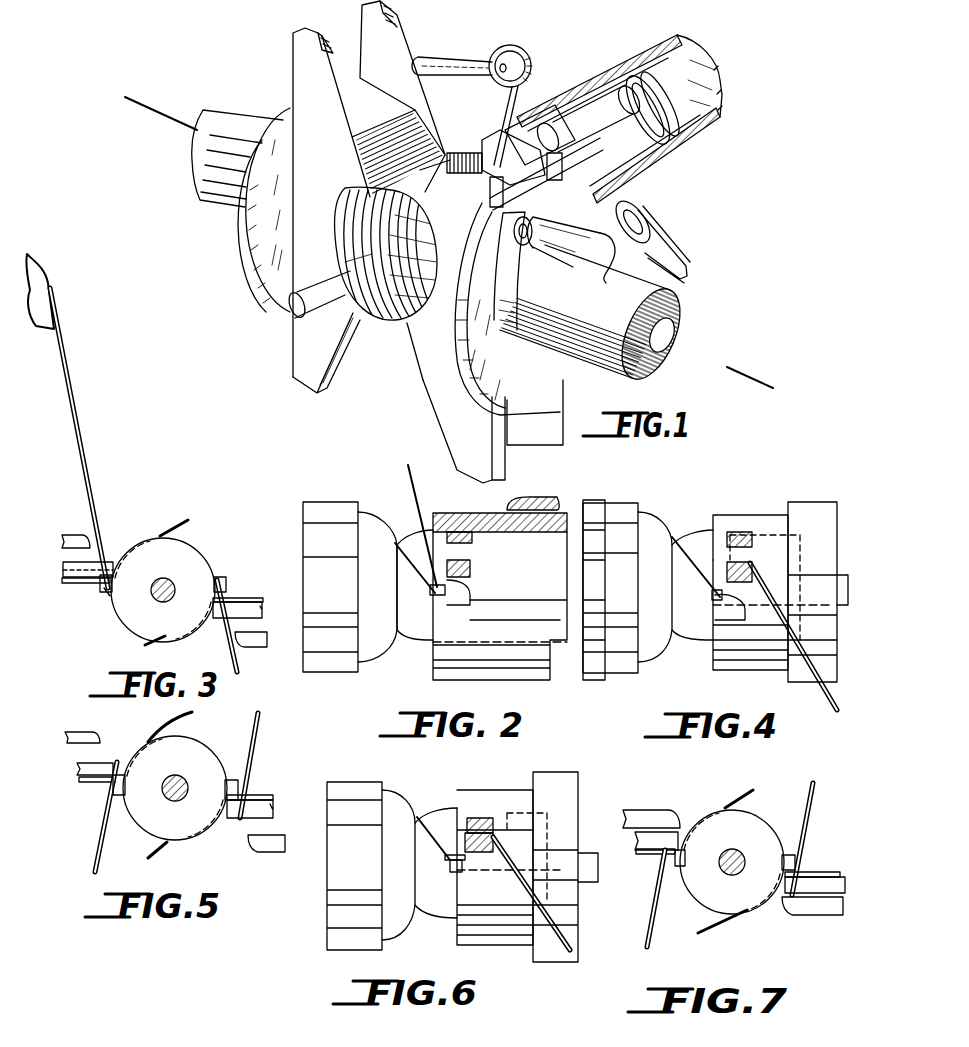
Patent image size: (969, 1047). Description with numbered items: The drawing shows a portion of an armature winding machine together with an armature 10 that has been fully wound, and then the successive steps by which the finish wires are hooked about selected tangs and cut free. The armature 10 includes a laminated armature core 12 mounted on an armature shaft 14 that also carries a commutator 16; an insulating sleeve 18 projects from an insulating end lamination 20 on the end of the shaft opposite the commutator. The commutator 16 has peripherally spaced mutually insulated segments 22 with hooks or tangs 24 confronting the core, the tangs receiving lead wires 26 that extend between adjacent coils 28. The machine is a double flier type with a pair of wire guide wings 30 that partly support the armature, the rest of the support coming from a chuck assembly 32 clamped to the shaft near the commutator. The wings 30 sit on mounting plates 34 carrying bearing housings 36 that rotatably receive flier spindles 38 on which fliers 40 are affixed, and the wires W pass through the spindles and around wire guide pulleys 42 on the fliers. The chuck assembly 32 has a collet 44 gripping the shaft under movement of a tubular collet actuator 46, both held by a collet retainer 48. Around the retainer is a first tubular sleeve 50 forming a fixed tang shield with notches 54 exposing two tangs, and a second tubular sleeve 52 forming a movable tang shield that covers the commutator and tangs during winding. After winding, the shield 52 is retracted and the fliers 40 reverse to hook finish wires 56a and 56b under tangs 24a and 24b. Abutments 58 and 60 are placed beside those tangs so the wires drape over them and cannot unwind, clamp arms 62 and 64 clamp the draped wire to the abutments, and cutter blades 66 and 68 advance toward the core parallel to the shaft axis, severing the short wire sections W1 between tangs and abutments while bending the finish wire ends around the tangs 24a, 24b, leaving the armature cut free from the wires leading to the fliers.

In FIG. 1, the armature 10 is at (382, 340).
In FIG. 1, the laminated armature core 12 is at (425, 178).
In FIG. 2, the laminated armature core 12 is at (330, 500).
In FIG. 4, the laminated armature core 12 is at (612, 512).
In FIG. 6, the laminated armature core 12 is at (355, 790).
In FIG. 1, the armature shaft 14 is at (300, 312).
In FIG. 3, the armature shaft 14 is at (152, 598).
In FIG. 5, the armature shaft 14 is at (175, 788).
In FIG. 6, the armature shaft 14 is at (590, 882).
In FIG. 7, the armature shaft 14 is at (725, 875).
In FIG. 1, the commutator 16 is at (473, 137).
In FIG. 2, the commutator 16 is at (505, 548).
In FIG. 3, the commutator 16 is at (195, 553).
In FIG. 4, the commutator 16 is at (771, 602).
In FIG. 5, the commutator 16 is at (205, 755).
In FIG. 7, the commutator 16 is at (752, 815).
In FIG. 1, the insulating sleeve 18 is at (345, 265).
In FIG. 1, the insulating end lamination 20 is at (366, 192).
In FIG. 1, the commutator segments 22 is at (535, 160).
In FIG. 1, the tangs 24 is at (480, 158).
In FIG. 2, the tangs 24 is at (420, 515).
In FIG. 2, the tang 24a is at (435, 600).
In FIG. 3, the tang 24a is at (105, 592).
In FIG. 5, the tang 24a is at (118, 800).
In FIG. 6, the tang 24a is at (458, 868).
In FIG. 7, the tang 24a is at (680, 858).
In FIG. 3, the tang 24b is at (225, 590).
In FIG. 5, the tang 24b is at (228, 785).
In FIG. 7, the tang 24b is at (790, 850).
In FIG. 1, the lead wires 26 is at (470, 140).
In FIG. 2, the lead wires 26 is at (404, 535).
In FIG. 4, the lead wires 26 is at (680, 645).
In FIG. 6, the lead wires 26 is at (436, 863).
In FIG. 1, the coils 28 is at (424, 240).
In FIG. 2, the coils 28 is at (366, 510).
In FIG. 4, the coils 28 is at (648, 520).
In FIG. 6, the coils 28 is at (398, 865).
In FIG. 1, the wire guide wings 30 is at (290, 58).
In FIG. 1, the chuck assembly 32 is at (630, 75).
In FIG. 1, the mounting plates 34 is at (242, 222).
In FIG. 1, the bearing housings 36 is at (505, 280).
In FIG. 1, the flier spindles 38 is at (215, 105).
In FIG. 1, the fliers 40 is at (460, 57).
In FIG. 1, the wire guide pulleys 42 is at (525, 52).
In FIG. 3, the wire guide pulleys 42 is at (55, 290).
In FIG. 1, the collet 44 is at (585, 118).
In FIG. 1, the collet actuator 46 is at (660, 97).
In FIG. 1, the collet retainer 48 is at (655, 78).
In FIG. 1, the first tubular sleeve 50 is at (710, 80).
In FIG. 2, the first tubular sleeve 50 is at (560, 512).
In FIG. 4, the first tubular sleeve 50 is at (730, 522).
In FIG. 6, the first tubular sleeve 50 is at (470, 796).
In FIG. 1, the second tubular sleeve 52 is at (680, 48).
In FIG. 2, the second tubular sleeve 52 is at (530, 500).
In FIG. 4, the second tubular sleeve 52 is at (825, 505).
In FIG. 6, the second tubular sleeve 52 is at (560, 778).
In FIG. 2, the notches 54 is at (475, 595).
In FIG. 4, the notches 54 is at (715, 608).
In FIG. 2, the finish wire 56a is at (428, 585).
In FIG. 3, the finish wire 56a is at (172, 522).
In FIG. 4, the finish wire 56a is at (700, 575).
In FIG. 5, the finish wire 56a is at (190, 722).
In FIG. 7, the finish wire 56a is at (728, 808).
In FIG. 3, the finish wire 56b is at (148, 647).
In FIG. 5, the finish wire 56b is at (165, 852).
In FIG. 7, the finish wire 56b is at (705, 932).
In FIG. 2, the abutment 58 is at (475, 538).
In FIG. 3, the abutment 58 is at (62, 570).
In FIG. 4, the abutment 58 is at (760, 568).
In FIG. 5, the abutment 58 is at (77, 770).
In FIG. 6, the abutment 58 is at (458, 872).
In FIG. 7, the abutment 58 is at (635, 840).
In FIG. 3, the abutment 60 is at (258, 612).
In FIG. 5, the abutment 60 is at (272, 812).
In FIG. 7, the abutment 60 is at (843, 885).
In FIG. 3, the clamp arm 62 is at (70, 535).
In FIG. 4, the clamp arm 62 is at (724, 537).
In FIG. 5, the clamp arm 62 is at (82, 732).
In FIG. 6, the clamp arm 62 is at (473, 820).
In FIG. 7, the clamp arm 62 is at (660, 815).
In FIG. 3, the clamp arm 64 is at (262, 640).
In FIG. 5, the clamp arm 64 is at (270, 848).
In FIG. 7, the clamp arm 64 is at (810, 915).
In FIG. 3, the cutter blade 66 is at (75, 590).
In FIG. 5, the cutter blade 66 is at (85, 785).
In FIG. 6, the cutter blade 66 is at (452, 862).
In FIG. 7, the cutter blade 66 is at (655, 855).
In FIG. 3, the cutter blade 68 is at (252, 598).
In FIG. 5, the cutter blade 68 is at (262, 797).
In FIG. 7, the cutter blade 68 is at (808, 872).
In FIG. 1, the wires W is at (132, 104).
In FIG. 3, the wires W is at (80, 402).
In FIG. 5, the wires W is at (258, 722).
In FIG. 7, the wires W is at (730, 865).
In FIG. 4, the wire sections W1 is at (722, 578).
In FIG. 5, the wire sections W1 is at (110, 800).
In FIG. 6, the wire sections W1 is at (458, 825).